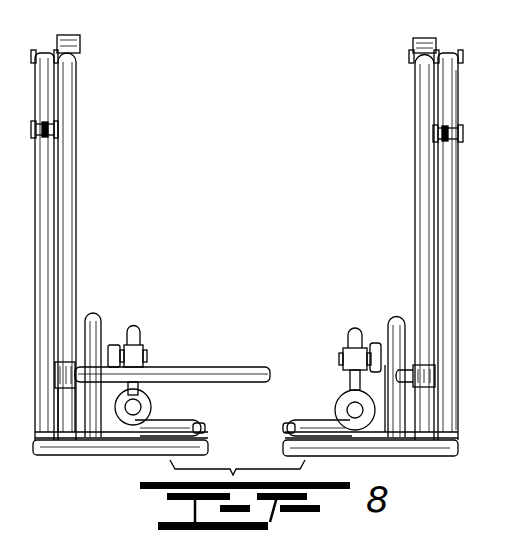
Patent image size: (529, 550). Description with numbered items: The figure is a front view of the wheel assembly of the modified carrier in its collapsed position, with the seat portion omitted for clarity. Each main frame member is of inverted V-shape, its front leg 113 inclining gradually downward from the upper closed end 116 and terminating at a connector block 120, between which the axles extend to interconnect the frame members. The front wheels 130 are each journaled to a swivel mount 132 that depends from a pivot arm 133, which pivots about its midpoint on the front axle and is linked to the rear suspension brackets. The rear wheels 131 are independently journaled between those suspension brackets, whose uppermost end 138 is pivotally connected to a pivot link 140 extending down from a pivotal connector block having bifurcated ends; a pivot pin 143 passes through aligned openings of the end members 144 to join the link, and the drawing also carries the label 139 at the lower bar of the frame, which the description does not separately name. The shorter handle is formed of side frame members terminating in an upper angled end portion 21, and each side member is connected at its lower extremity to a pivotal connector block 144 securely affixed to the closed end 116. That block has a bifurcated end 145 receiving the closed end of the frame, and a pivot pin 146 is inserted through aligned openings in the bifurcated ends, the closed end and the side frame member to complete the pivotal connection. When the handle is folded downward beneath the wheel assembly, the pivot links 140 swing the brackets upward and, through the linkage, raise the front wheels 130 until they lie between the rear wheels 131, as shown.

The front leg 113 is at (76, 151).
The upper closed end 116 is at (436, 56).
The connector block 120 is at (435, 373).
The front wheel 130 is at (135, 325).
The rear wheel 131 is at (93, 313).
The swivel mount 132 is at (338, 408).
The pivot arm 133 is at (138, 387).
The uppermost end 138 is at (458, 101).
The base bar 139 is at (425, 443).
The pivot link 140 is at (458, 312).
The pivot pin 143 is at (463, 133).
The pivotal connector block 144 is at (80, 37).
The bifurcated end 145 is at (413, 66).
The pivot pin 146 is at (409, 57).
The upper angled end portion 21 is at (98, 455).